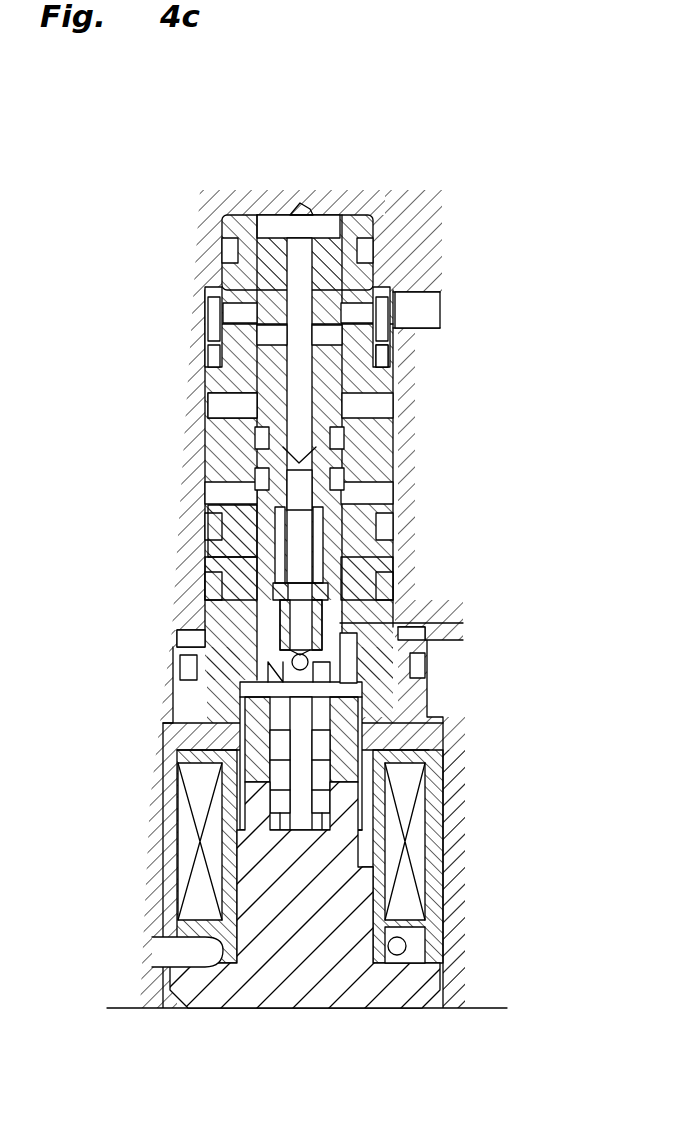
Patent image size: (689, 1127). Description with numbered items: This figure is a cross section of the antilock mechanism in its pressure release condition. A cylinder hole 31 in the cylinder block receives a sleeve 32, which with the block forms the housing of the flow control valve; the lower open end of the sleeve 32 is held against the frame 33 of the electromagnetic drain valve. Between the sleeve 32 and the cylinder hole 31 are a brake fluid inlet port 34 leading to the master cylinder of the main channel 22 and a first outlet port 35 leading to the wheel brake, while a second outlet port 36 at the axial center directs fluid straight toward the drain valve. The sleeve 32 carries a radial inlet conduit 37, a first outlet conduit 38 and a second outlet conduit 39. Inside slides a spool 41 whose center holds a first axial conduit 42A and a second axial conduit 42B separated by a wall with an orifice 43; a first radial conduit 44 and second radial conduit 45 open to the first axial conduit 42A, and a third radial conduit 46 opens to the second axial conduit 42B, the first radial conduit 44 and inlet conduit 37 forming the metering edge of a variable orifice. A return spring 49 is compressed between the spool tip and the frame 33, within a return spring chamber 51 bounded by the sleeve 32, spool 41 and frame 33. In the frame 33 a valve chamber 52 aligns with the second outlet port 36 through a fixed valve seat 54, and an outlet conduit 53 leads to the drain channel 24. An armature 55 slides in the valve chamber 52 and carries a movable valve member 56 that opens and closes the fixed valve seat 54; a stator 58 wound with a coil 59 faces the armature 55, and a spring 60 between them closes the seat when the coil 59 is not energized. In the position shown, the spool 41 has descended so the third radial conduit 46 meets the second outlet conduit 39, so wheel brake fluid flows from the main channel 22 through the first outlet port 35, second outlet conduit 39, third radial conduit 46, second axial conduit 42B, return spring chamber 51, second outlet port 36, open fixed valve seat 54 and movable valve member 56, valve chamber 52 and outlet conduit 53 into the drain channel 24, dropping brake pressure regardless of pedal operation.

The main channel 22 is at (167, 432).
The drain channel 24 is at (443, 635).
The cylinder hole 31 is at (293, 207).
The sleeve 32 is at (373, 215).
The frame 33 is at (220, 680).
The brake fluid inlet port 34 is at (393, 310).
The first outlet port 35 is at (215, 437).
The second outlet port 36 is at (350, 558).
The inlet conduit 37 is at (355, 303).
The first outlet conduit 38 is at (213, 380).
The second outlet conduit 39 is at (233, 490).
The spool 41 is at (270, 263).
The first axial conduit 42A is at (298, 263).
The second axial conduit 42B is at (305, 488).
The orifice 43 is at (305, 432).
The first radial conduit 44 is at (397, 367).
The second radial conduit 45 is at (260, 413).
The third radial conduit 46 is at (317, 462).
The return spring 49 is at (250, 560).
The return spring chamber 51 is at (296, 528).
The valve chamber 52 is at (240, 723).
The outlet conduit 53 is at (360, 640).
The fixed valve seat 54 is at (330, 643).
The armature 55 is at (227, 773).
The movable valve member 56 is at (340, 700).
The stator 58 is at (303, 970).
The coil 59 is at (205, 907).
The spring 60 is at (330, 800).